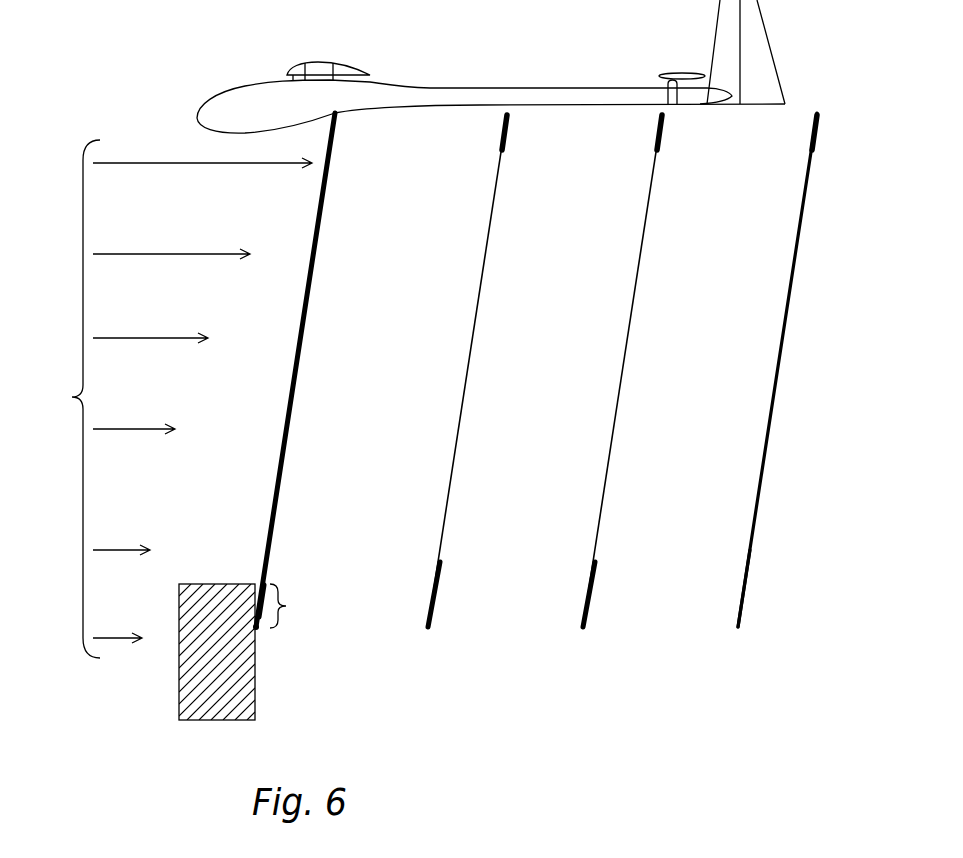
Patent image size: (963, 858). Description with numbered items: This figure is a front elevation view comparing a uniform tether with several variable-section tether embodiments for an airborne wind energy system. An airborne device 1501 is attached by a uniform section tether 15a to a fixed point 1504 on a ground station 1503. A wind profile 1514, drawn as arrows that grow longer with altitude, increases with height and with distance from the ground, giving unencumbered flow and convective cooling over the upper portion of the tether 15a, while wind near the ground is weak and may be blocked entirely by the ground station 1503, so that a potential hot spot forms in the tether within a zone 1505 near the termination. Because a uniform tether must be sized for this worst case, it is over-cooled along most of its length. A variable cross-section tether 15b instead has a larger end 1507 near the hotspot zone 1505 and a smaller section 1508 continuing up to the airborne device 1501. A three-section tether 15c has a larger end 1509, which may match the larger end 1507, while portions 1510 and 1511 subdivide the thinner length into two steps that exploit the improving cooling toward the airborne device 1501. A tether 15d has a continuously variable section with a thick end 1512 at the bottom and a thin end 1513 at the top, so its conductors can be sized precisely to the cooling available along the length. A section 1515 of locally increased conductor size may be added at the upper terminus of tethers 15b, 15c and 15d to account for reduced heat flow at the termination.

The airborne device 1501 is at (389, 88).
The ground station 1503 is at (179, 683).
The fixed point 1504 is at (258, 631).
The zone 1505 is at (301, 606).
The larger end 1507 is at (442, 575).
The smaller section 1508 is at (483, 272).
The larger end 1509 is at (595, 575).
The portion 1510 is at (617, 412).
The portion 1511 is at (643, 232).
The thick end 1512 is at (750, 575).
The thin end 1513 is at (798, 233).
The wind profile 1514 is at (165, 399).
The section 1515 is at (510, 125).
The uniform section tether 15a is at (292, 442).
The variable cross-section tether 15b is at (494, 389).
The tether 15c is at (651, 389).
The tether 15d is at (805, 389).